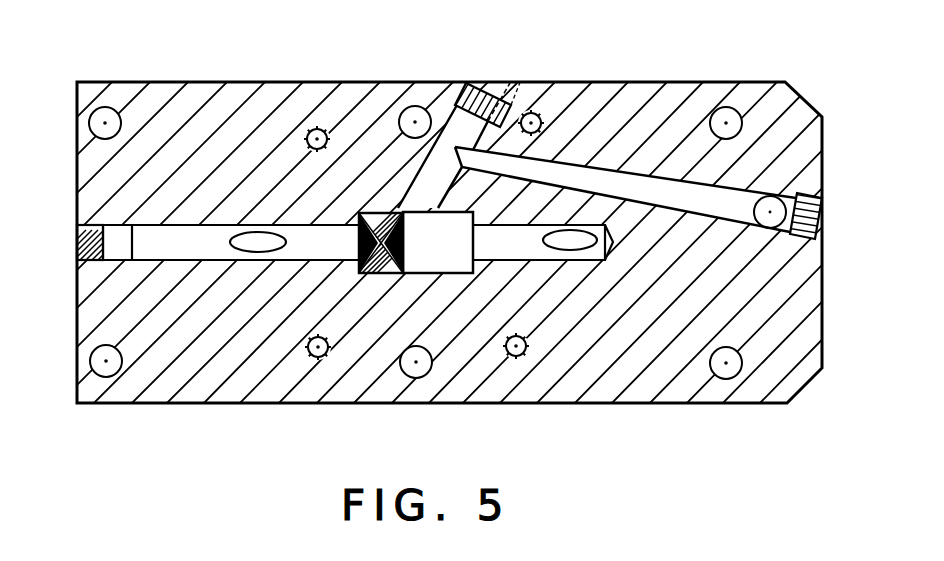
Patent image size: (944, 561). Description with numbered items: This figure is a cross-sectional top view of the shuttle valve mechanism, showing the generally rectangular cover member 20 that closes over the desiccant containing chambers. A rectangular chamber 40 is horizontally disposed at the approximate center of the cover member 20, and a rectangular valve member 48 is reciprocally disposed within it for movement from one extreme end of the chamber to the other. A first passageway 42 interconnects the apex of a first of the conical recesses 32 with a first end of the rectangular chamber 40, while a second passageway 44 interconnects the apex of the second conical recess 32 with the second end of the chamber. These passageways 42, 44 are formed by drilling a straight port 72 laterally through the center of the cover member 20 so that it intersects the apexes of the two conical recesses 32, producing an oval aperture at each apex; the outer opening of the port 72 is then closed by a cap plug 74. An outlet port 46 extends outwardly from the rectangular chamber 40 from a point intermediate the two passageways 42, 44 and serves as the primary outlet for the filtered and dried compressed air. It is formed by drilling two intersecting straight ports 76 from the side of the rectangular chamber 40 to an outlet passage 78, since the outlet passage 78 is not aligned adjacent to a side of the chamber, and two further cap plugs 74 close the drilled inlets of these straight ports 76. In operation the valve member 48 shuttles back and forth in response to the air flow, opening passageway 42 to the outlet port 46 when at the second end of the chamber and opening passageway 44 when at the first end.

The cover member 20 is at (175, 92).
The conical recesses 32 is at (259, 244).
The rectangular chamber 40 is at (445, 253).
The first passageway 42 is at (322, 247).
The second passageway 44 is at (512, 243).
The outlet port 46 is at (432, 175).
The rectangular valve member 48 is at (378, 260).
The straight port 72 is at (178, 245).
The cap plugs 74 is at (77, 237).
The straight ports 76 is at (487, 88).
The outlet passage 78 is at (770, 222).